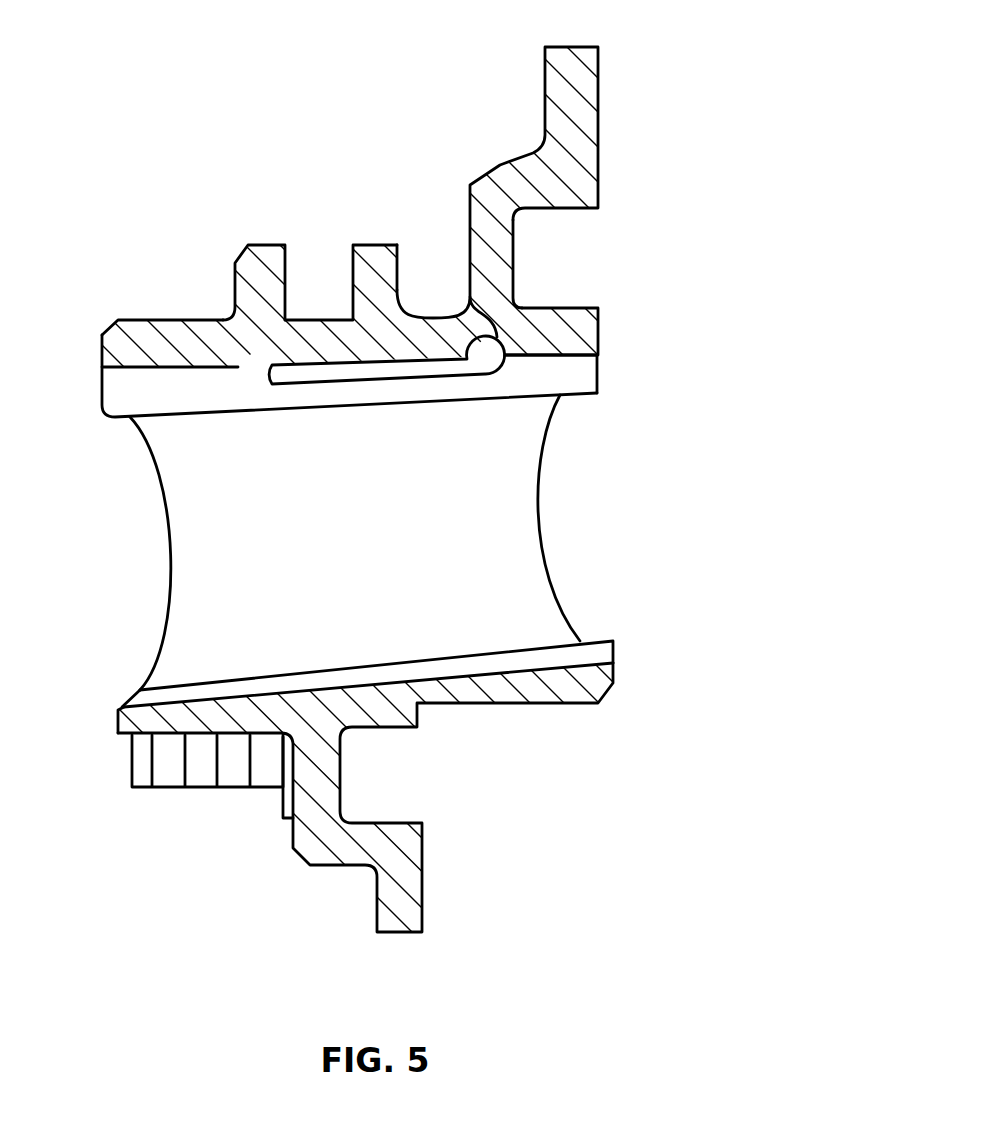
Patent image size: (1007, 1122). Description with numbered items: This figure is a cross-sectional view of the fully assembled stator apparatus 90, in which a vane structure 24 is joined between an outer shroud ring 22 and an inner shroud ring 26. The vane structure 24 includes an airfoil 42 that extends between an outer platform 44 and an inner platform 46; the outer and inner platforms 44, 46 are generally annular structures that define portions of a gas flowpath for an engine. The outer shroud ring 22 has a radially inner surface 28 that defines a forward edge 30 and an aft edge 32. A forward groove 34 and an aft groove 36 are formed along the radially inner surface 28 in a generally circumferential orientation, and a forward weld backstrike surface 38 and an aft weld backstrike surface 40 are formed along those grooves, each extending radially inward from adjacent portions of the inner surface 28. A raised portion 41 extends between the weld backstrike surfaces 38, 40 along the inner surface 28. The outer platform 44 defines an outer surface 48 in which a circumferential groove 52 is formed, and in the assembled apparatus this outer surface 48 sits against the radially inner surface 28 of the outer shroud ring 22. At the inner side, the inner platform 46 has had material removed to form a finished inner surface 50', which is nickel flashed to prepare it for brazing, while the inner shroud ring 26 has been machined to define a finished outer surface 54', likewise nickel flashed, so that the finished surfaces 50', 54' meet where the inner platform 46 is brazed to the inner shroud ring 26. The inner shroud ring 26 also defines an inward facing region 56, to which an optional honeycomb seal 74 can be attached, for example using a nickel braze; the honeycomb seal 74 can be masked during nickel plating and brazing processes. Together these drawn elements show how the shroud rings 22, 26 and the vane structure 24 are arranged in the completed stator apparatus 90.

The stator apparatus 90 is at (256, 122).
The outer shroud ring 22 is at (583, 118).
The aft groove 36 is at (518, 308).
The aft edge 32 is at (597, 355).
The aft weld backstrike surface 40 is at (473, 350).
The raised portion 41 is at (378, 350).
The forward weld backstrike surface 38 is at (280, 357).
The forward groove 34 is at (247, 350).
The outer surface 48 is at (165, 367).
The forward edge 30 is at (102, 367).
The circumferential groove 52 is at (460, 377).
The radially inner surface 28 is at (135, 370).
The outer platform 44 is at (585, 376).
The vane structure 24 is at (518, 517).
The airfoil 42 is at (346, 546).
The inner platform 46 is at (598, 645).
The finished outer surface 54' is at (125, 675).
The finished inner surface 50' is at (368, 709).
The inner shroud ring 26 is at (592, 690).
The inward facing region 56 is at (124, 737).
The honeycomb seal 74 is at (202, 778).